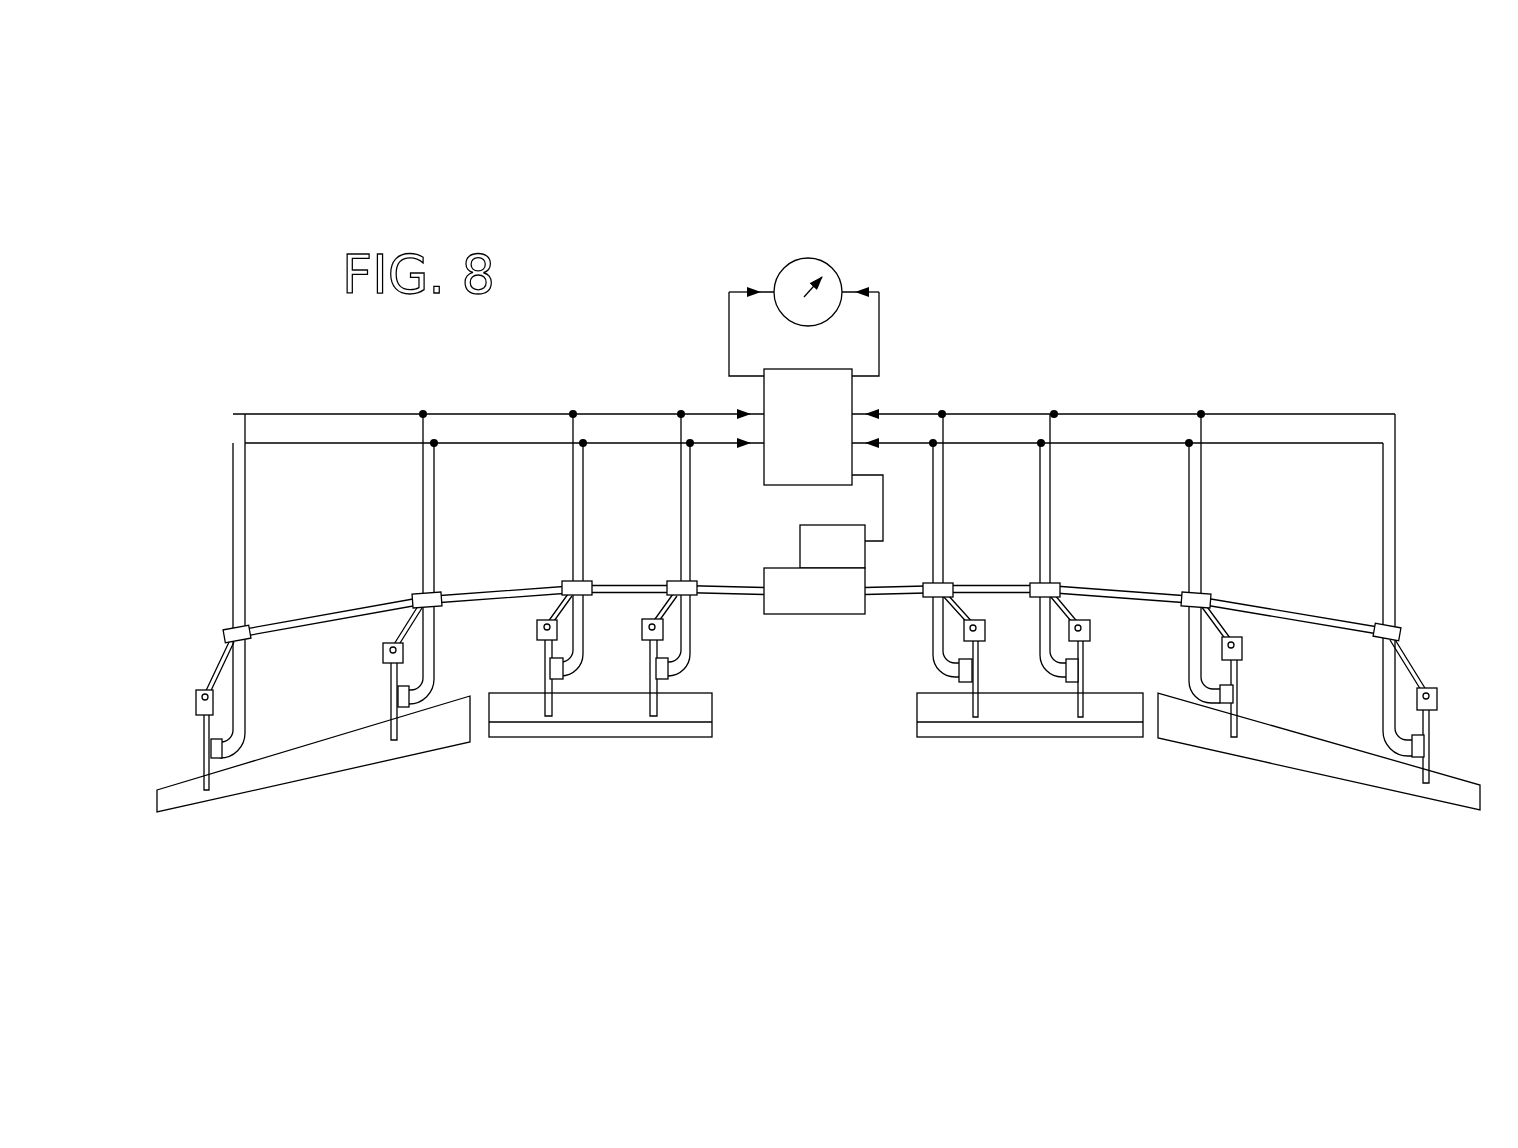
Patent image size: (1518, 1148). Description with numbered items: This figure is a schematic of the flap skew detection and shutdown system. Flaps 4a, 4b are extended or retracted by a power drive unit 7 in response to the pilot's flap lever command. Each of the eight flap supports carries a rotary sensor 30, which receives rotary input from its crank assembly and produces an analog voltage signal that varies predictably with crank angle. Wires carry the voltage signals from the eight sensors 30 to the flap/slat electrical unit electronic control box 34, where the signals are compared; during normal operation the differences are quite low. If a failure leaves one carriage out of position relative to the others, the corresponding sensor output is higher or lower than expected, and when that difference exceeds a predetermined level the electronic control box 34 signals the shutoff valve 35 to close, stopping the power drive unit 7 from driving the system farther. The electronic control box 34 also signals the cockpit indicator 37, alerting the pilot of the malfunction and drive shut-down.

The cockpit indicator 37 is at (794, 261).
The flap/slat electrical unit (FSEU) electronic control box 34 is at (852, 393).
The shutoff valve 35 is at (800, 541).
The power drive unit 7 is at (825, 607).
The rotary sensor 30 is at (211, 747).
The flap 4a is at (656, 748).
The flap 4b is at (348, 788).